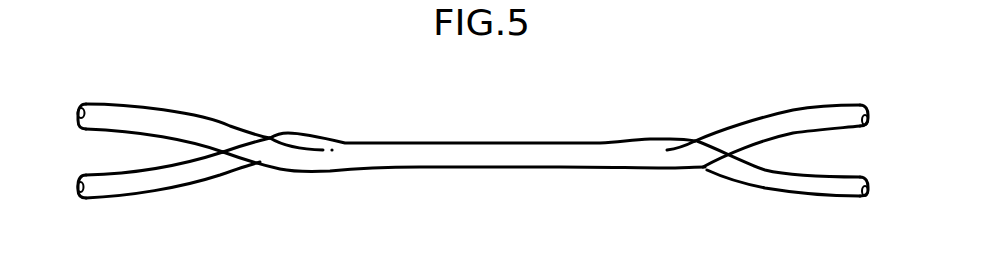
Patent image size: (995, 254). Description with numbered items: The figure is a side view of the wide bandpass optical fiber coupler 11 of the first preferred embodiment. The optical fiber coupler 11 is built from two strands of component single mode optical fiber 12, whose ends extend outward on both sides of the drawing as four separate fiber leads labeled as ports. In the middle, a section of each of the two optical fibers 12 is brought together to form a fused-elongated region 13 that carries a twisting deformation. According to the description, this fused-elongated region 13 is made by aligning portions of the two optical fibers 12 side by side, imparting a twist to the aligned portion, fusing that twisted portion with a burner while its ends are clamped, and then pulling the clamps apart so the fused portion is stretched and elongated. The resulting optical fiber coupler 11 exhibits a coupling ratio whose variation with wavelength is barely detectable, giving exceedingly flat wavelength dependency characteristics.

The wide bandpass optical fiber coupler 11 is at (577, 133).
The component single mode optical fiber 12 is at (142, 107).
The fused-elongated region 13 is at (463, 143).